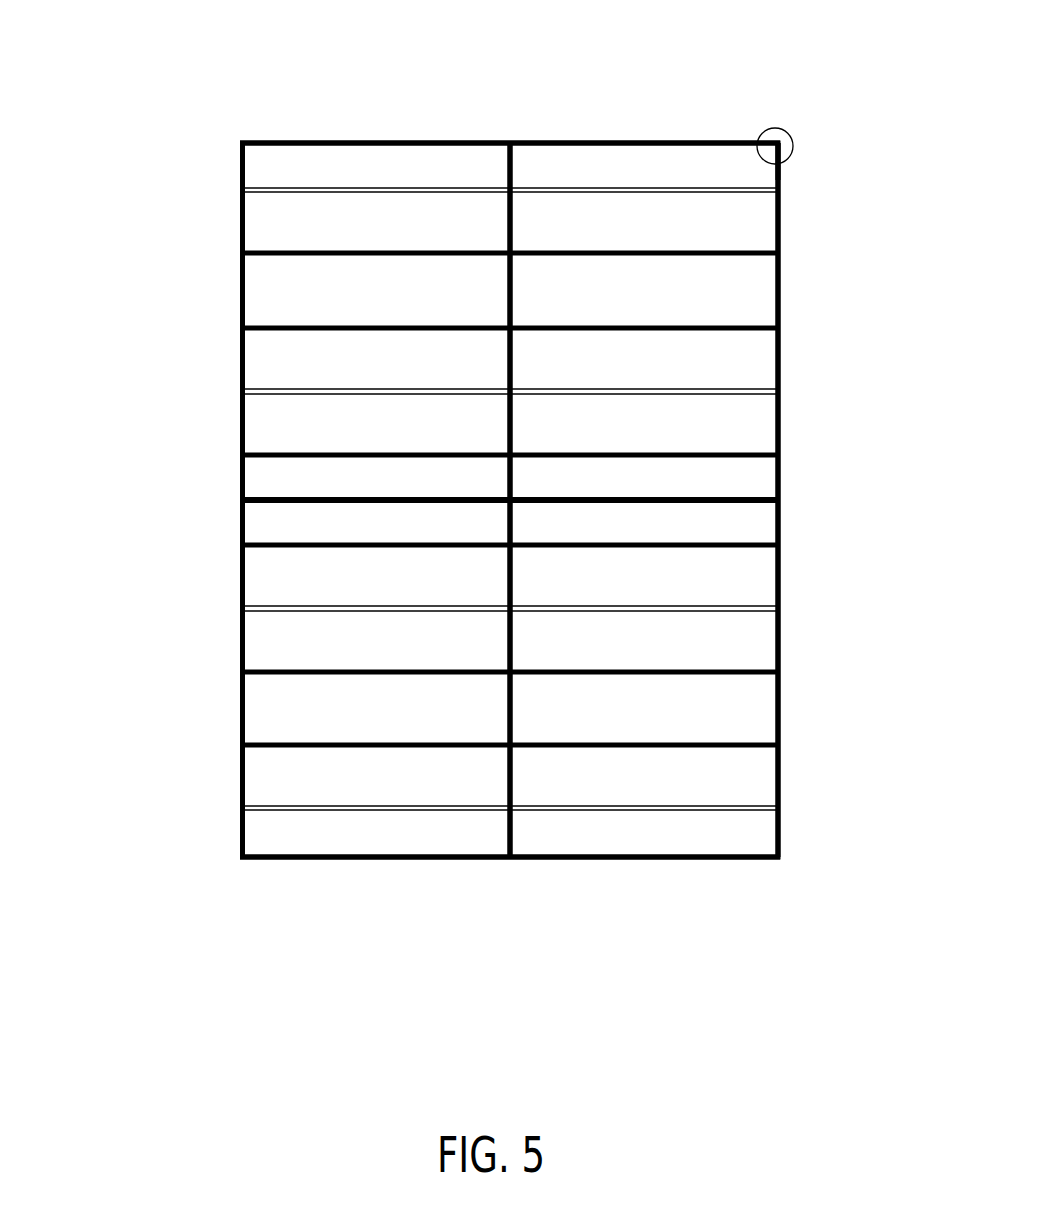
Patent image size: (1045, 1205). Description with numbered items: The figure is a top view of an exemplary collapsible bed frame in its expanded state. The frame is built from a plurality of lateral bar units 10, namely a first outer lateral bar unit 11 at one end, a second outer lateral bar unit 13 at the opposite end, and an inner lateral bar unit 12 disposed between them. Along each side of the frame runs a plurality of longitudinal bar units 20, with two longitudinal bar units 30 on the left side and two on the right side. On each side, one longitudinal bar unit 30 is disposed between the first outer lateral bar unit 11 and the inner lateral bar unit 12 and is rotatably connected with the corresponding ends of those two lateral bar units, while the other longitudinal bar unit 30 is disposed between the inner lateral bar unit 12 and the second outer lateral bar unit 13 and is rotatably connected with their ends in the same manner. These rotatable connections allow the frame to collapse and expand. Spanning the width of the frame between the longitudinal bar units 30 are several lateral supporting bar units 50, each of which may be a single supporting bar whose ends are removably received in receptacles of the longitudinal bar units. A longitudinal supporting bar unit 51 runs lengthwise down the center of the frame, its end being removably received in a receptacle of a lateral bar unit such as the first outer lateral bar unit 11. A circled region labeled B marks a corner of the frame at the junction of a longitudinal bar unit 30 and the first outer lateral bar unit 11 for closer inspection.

The plurality of lateral bar units 10 is at (142, 253).
The first outer lateral bar unit 11 is at (268, 147).
The inner lateral bar unit 12 is at (277, 501).
The second outer lateral bar unit 13 is at (272, 862).
The plurality of longitudinal bar units 20 is at (240, 248).
The longitudinal bar unit 30 is at (240, 413).
The lateral supporting bar unit 50 is at (710, 190).
The longitudinal supporting bar unit 51 is at (513, 178).
The detail region B is at (768, 129).